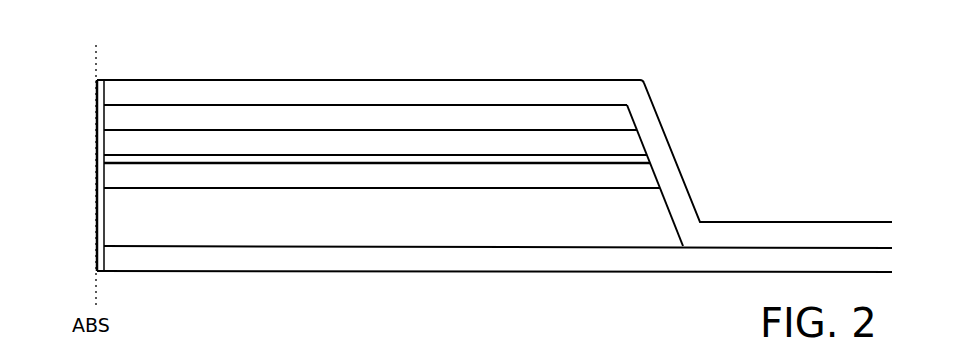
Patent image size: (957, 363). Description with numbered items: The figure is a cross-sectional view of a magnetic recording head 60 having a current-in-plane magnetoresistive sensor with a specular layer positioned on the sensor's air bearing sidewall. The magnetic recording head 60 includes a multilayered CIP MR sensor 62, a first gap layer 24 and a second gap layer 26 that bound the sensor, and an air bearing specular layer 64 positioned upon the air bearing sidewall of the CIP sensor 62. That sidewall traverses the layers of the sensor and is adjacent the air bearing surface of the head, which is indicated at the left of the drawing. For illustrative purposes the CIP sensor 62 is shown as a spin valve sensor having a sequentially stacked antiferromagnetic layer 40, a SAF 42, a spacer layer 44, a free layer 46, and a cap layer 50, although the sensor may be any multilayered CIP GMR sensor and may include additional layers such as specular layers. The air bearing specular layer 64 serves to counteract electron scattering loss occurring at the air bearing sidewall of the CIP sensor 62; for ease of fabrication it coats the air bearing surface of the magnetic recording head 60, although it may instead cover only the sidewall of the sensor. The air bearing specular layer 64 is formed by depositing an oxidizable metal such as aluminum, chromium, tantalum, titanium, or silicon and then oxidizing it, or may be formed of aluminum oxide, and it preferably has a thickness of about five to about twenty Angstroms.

The magnetic recording head 60 is at (494, 147).
The CIP MR sensor 62 is at (64, 175).
The air bearing specular layer 64 is at (102, 95).
The second gap layer 26 is at (195, 97).
The cap layer 50 is at (427, 123).
The free layer 46 is at (293, 148).
The spacer layer 44 is at (593, 160).
The SAF 42 is at (462, 180).
The antiferromagnetic layer 40 is at (337, 213).
The first gap layer 24 is at (196, 253).